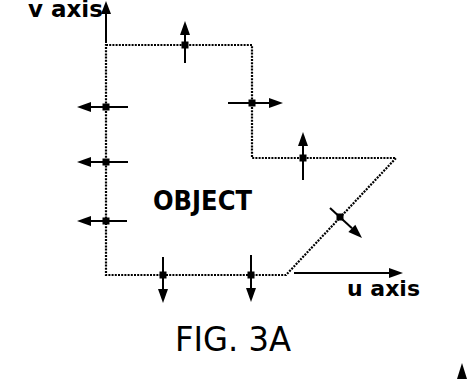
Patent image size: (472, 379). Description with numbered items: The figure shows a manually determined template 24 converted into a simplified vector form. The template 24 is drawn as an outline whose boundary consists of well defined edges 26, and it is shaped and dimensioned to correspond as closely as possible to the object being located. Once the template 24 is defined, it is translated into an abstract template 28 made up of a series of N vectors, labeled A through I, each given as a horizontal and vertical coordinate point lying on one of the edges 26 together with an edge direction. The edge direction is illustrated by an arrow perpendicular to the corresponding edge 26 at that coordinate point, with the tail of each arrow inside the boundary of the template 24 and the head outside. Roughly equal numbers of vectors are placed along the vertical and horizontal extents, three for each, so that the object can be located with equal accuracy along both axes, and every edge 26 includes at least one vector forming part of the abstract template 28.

The template 24 is at (232, 160).
The edges 26 is at (122, 45).
The abstract template 28 is at (92, 90).